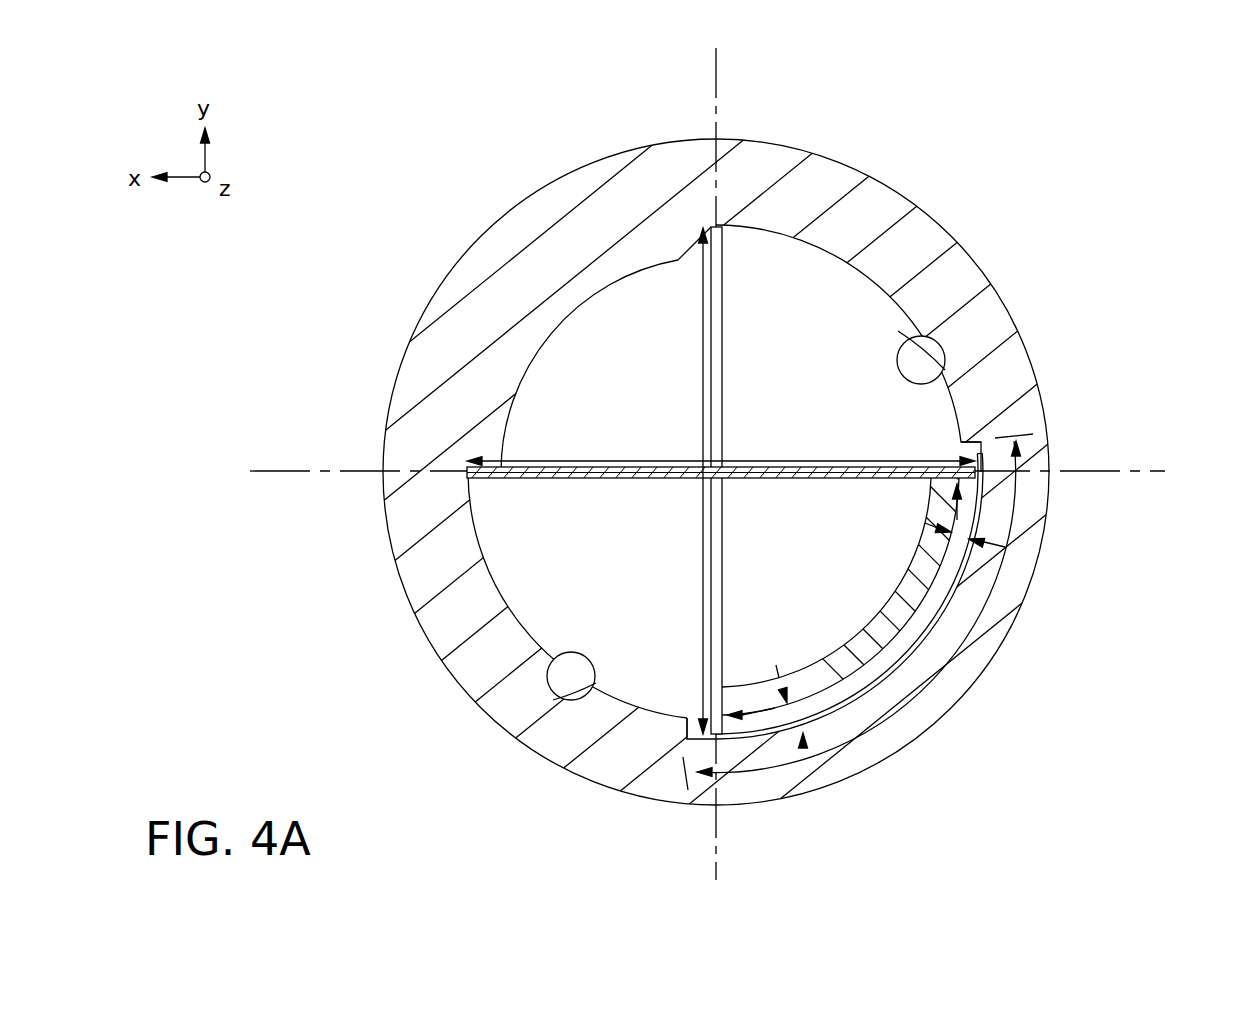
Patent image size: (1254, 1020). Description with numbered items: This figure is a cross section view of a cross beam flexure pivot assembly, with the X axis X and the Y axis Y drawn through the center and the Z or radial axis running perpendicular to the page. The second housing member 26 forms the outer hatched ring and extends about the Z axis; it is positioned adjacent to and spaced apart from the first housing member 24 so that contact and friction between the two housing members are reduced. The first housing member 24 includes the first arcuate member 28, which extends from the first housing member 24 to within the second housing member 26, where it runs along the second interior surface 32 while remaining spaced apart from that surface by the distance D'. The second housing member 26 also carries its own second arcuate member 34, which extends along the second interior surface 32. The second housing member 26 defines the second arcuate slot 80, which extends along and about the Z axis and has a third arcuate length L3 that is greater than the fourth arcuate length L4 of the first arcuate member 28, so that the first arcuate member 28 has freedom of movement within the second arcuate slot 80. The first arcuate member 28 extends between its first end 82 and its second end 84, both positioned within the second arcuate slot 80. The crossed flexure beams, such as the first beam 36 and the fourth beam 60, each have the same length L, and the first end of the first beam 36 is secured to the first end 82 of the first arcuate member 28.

The first housing member 24 is at (868, 698).
The second housing member 26 is at (512, 237).
The first arcuate member 28 is at (943, 577).
The second interior surface 32 is at (940, 345).
The second arcuate member 34 is at (538, 355).
The first beam 36 is at (625, 480).
The fourth beam 60 is at (720, 305).
The second arcuate slot 80 is at (950, 438).
The first end 82 is at (990, 500).
The second end 84 is at (740, 690).
The length L is at (770, 458).
The third arcuate length L3 is at (772, 808).
The fourth arcuate length L4 is at (935, 560).
The distance D' is at (885, 589).
The X axis X is at (1118, 470).
The Y axis Y is at (718, 92).